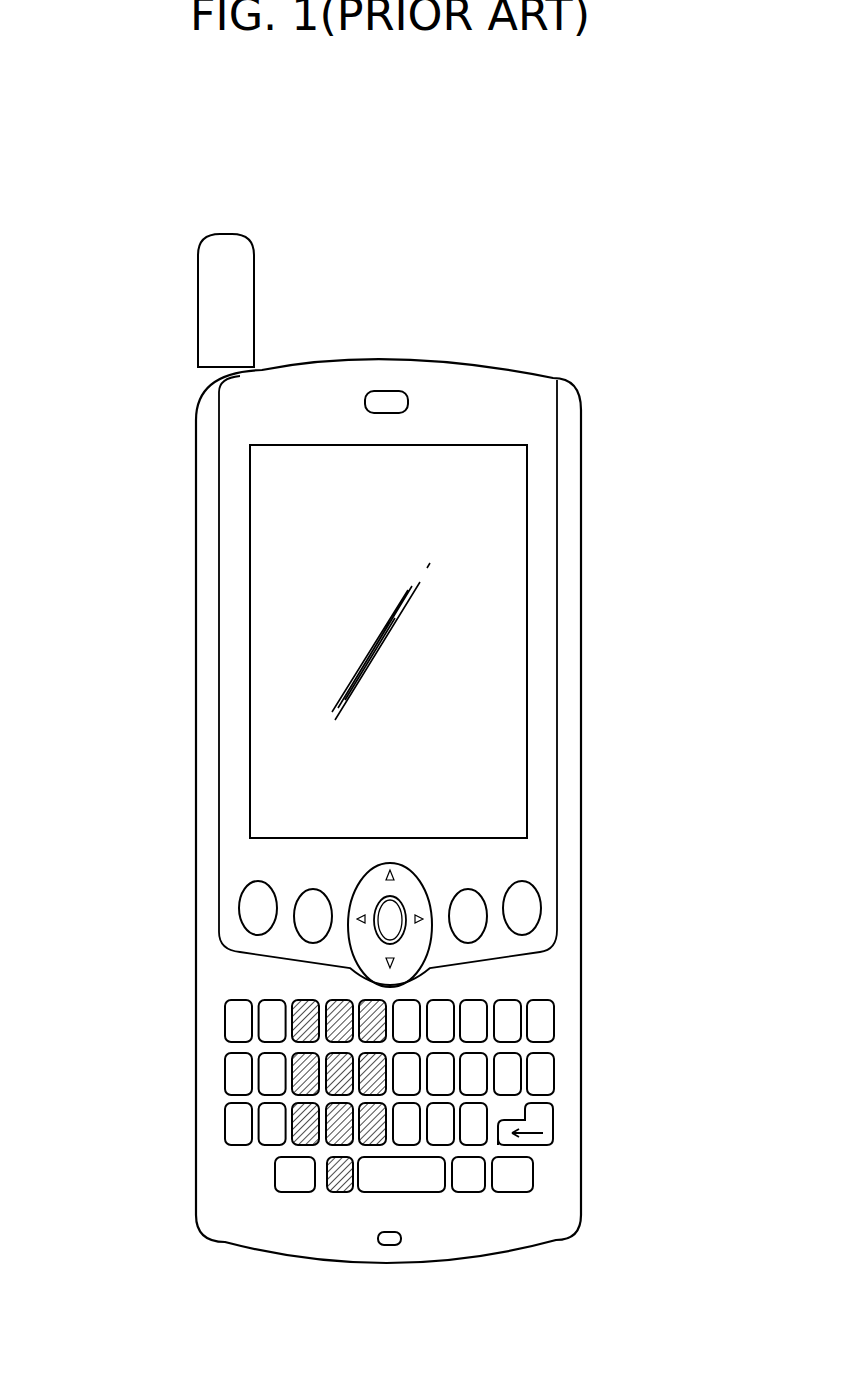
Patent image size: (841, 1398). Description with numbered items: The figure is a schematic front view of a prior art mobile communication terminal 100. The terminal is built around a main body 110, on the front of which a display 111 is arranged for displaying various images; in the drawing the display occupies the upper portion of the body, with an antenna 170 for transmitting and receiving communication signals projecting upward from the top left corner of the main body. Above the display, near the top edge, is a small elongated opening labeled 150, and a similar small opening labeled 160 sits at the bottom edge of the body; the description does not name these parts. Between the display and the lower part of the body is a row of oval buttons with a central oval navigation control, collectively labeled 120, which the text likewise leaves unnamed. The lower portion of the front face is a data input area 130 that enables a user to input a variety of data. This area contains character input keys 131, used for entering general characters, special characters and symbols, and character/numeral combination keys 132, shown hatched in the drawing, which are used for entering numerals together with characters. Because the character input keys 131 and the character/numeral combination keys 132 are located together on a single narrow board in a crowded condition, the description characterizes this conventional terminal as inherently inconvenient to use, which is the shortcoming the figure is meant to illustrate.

The mobile communication terminal 100 is at (376, 797).
The main body 110 is at (584, 536).
The display 111 is at (508, 633).
The function keys / navigation key unit 120 is at (534, 905).
The data input area 130 is at (401, 1063).
The character input keys 131 is at (228, 1025).
The character/numeral combination keys 132 is at (295, 1003).
The speaker (receiver) 150 is at (389, 405).
The microphone 160 is at (390, 1245).
The antenna 170 is at (210, 307).